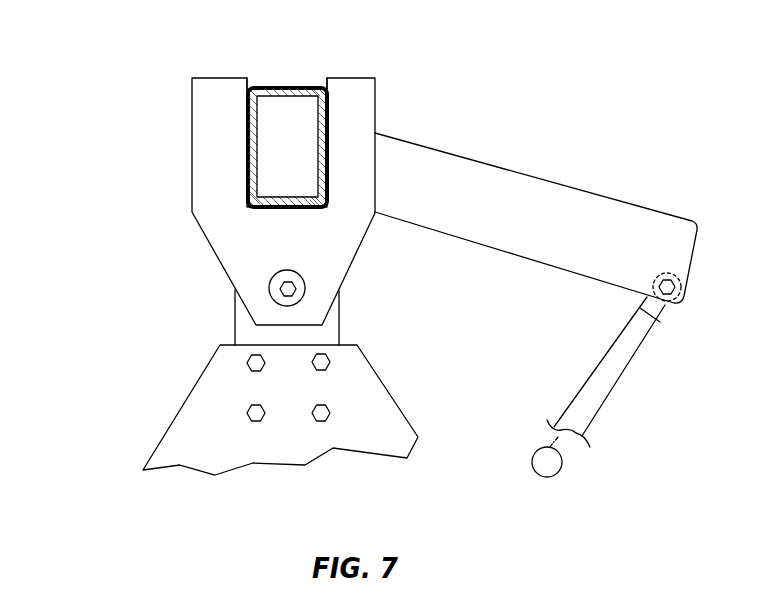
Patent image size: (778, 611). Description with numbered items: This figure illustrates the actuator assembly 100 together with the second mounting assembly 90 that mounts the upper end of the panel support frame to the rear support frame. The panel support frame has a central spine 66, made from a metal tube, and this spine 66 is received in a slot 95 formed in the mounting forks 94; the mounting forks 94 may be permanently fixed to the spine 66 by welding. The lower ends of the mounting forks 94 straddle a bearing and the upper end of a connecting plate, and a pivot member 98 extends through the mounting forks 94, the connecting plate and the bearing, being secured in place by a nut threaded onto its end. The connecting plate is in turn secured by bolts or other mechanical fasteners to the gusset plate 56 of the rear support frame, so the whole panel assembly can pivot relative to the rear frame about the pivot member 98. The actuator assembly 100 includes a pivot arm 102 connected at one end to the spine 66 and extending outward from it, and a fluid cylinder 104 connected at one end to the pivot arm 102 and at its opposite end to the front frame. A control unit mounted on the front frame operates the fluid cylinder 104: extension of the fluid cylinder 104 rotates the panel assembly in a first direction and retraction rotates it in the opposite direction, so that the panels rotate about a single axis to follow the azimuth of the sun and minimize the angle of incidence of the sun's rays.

The gusset plate 56 is at (195, 418).
The spine 66 is at (298, 86).
The second mounting assembly 90 is at (150, 290).
The mounting forks 94 is at (188, 182).
The slot 95 is at (257, 76).
The pivot member 98 is at (292, 290).
The actuator assembly 100 is at (627, 176).
The pivot arm 102 is at (473, 182).
The fluid cylinder 104 is at (603, 385).